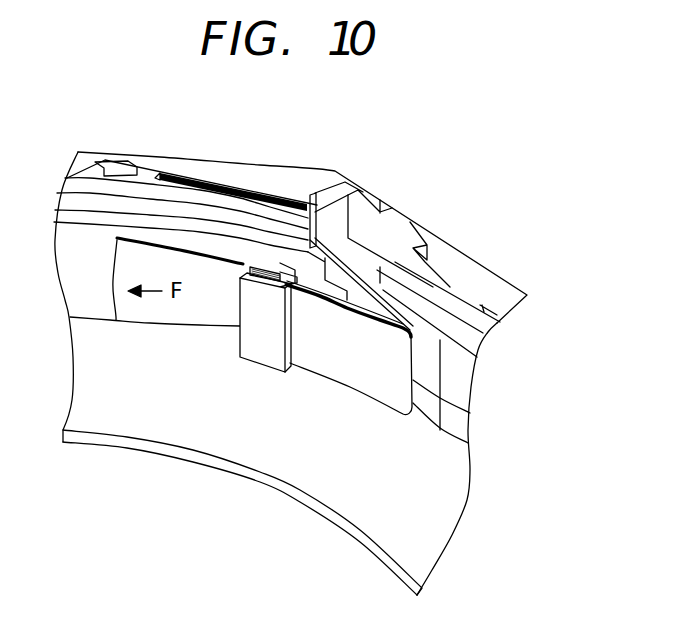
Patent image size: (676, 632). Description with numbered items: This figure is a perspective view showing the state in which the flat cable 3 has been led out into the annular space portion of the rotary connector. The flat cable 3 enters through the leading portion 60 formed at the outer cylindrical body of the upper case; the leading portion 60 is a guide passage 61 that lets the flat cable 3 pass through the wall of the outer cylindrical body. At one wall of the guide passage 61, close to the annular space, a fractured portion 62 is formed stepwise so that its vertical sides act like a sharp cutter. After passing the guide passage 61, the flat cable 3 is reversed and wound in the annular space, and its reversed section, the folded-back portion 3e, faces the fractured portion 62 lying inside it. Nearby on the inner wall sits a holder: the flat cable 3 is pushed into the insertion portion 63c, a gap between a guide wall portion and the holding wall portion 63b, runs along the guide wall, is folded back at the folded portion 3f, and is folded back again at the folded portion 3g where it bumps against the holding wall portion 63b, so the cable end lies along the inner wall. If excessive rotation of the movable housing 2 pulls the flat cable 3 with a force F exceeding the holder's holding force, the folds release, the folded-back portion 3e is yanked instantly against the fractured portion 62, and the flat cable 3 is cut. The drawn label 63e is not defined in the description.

The movable housing 2 is at (183, 232).
The flat cable 3 is at (393, 297).
The folded-back portion 3e is at (471, 414).
The folded portion 3f is at (250, 266).
The folded portion 3g is at (273, 268).
The leading portion 60 is at (440, 352).
The guide passage 61 is at (427, 260).
The fractured portion 62 is at (368, 288).
The holding wall portion 63b is at (310, 217).
The insertion portion 63c is at (303, 272).
The protrusion 63e is at (250, 320).